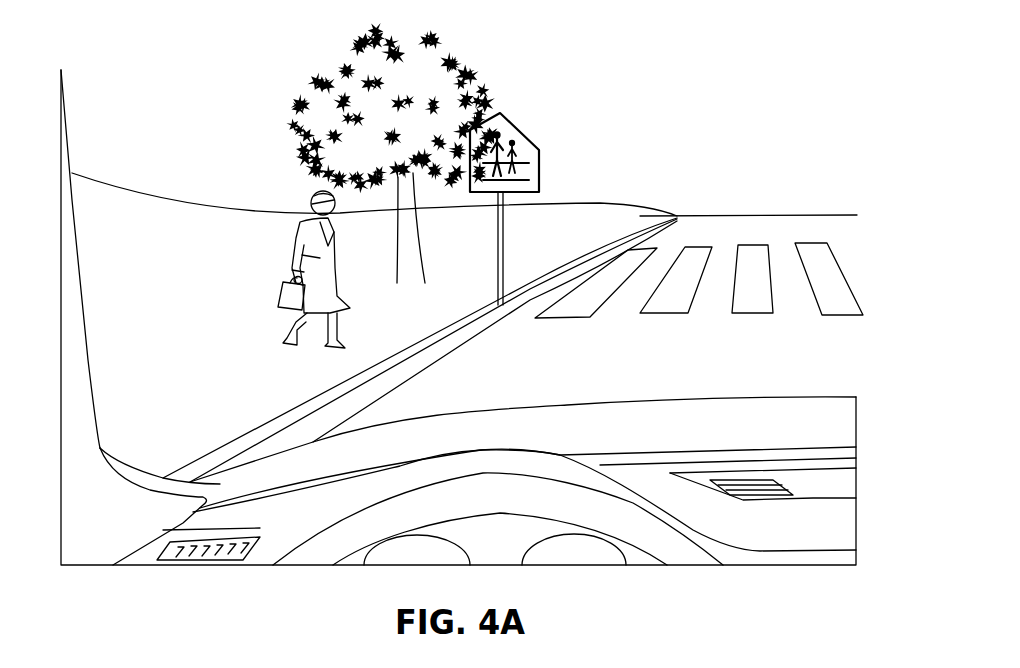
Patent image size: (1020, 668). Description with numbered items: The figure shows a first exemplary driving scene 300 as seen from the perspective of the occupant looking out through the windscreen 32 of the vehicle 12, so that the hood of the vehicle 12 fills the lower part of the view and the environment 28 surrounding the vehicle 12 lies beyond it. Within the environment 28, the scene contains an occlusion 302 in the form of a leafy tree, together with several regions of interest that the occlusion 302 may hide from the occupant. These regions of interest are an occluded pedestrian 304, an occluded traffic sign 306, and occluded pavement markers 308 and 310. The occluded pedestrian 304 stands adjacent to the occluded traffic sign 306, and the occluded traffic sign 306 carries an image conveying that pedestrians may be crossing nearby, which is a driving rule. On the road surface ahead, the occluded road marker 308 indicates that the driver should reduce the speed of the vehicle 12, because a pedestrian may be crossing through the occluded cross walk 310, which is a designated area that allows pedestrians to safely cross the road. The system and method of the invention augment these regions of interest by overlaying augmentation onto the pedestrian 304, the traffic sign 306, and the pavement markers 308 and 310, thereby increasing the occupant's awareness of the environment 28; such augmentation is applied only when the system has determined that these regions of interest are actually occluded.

The vehicle 12 is at (743, 434).
The environment 28 is at (173, 270).
The windscreen 32 is at (87, 360).
The first exemplary driving scene 300 is at (227, 137).
The occlusion 302 is at (350, 62).
The occluded pedestrian 304 is at (295, 262).
The occluded traffic sign 306 is at (540, 172).
The occluded pavement marker 308 is at (600, 366).
The occluded cross walk 310 is at (706, 248).